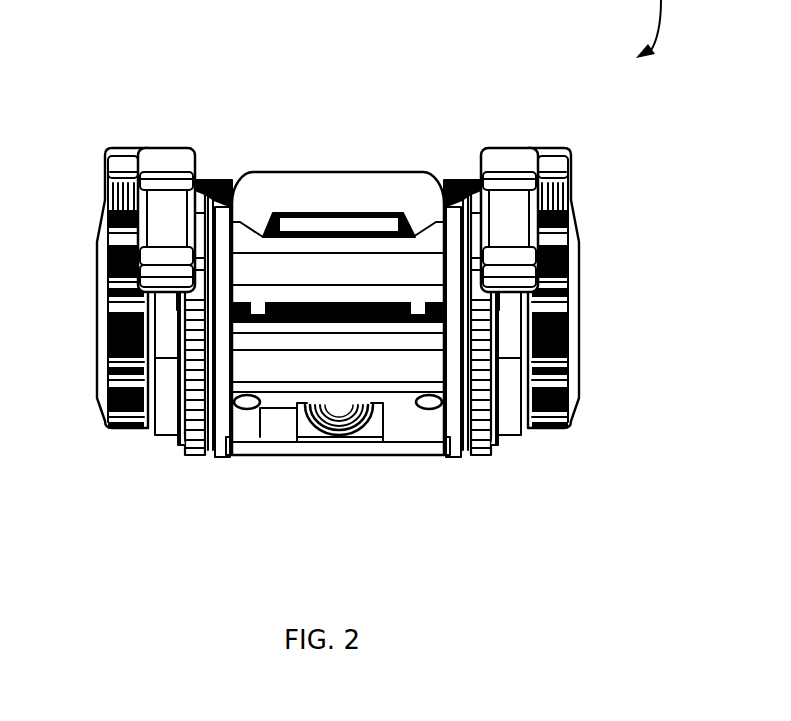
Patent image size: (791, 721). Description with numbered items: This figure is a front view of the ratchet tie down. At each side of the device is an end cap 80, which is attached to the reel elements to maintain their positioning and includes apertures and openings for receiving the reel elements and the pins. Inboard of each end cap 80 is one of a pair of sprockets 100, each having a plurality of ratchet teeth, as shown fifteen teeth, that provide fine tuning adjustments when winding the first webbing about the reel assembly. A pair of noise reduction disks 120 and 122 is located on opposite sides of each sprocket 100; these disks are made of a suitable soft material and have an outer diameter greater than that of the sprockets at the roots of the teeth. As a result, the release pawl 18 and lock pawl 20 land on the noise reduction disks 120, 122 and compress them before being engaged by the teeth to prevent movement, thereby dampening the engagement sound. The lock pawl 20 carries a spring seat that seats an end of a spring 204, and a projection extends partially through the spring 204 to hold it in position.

The release pawl 18 is at (347, 188).
The lock pawl 20 is at (271, 401).
The end caps 80 is at (102, 351).
The sprockets 100 is at (192, 458).
The noise reduction disk 120 is at (167, 430).
The noise reduction disk 122 is at (208, 430).
The spring 204 is at (348, 432).